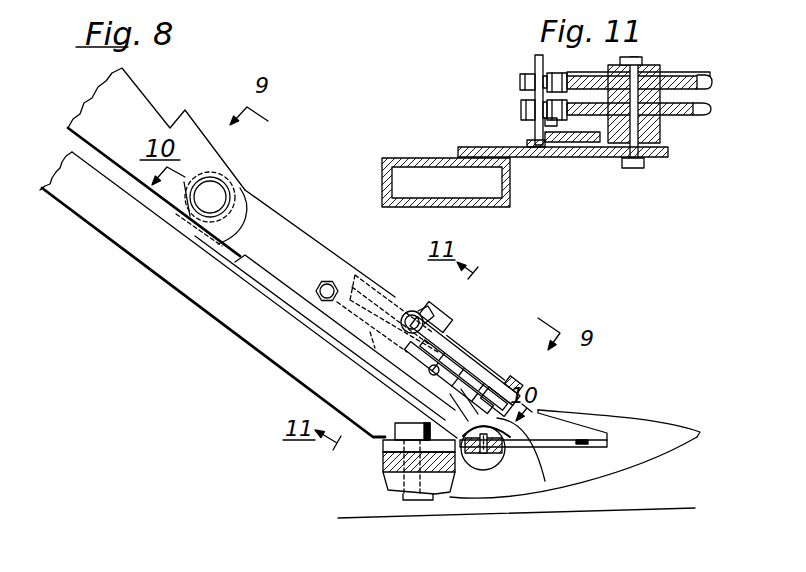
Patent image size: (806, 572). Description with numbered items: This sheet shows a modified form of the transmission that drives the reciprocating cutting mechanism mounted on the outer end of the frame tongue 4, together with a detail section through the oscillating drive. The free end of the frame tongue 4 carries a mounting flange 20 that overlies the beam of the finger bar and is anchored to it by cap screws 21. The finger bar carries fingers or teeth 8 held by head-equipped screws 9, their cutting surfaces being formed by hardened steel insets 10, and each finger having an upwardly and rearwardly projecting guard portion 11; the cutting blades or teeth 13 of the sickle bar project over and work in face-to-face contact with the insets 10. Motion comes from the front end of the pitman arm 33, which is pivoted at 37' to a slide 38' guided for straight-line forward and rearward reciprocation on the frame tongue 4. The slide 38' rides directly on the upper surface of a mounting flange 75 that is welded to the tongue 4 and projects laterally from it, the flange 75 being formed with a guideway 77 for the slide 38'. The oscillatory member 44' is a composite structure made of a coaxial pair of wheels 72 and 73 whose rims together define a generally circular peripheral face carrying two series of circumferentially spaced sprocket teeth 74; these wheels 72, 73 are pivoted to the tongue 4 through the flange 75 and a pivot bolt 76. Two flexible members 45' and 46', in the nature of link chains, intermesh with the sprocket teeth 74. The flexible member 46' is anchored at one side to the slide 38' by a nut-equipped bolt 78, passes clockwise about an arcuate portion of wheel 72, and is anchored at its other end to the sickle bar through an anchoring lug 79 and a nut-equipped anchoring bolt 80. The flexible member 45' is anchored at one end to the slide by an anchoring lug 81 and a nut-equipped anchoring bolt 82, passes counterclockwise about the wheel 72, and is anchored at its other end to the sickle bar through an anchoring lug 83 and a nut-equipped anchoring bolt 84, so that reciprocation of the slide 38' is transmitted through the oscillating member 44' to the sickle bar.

In FIG. 8, the frame tongue 4 is at (290, 350).
In FIG. 11, the frame tongue 4 is at (382, 182).
In FIG. 8, the fingers or teeth 8 is at (508, 483).
In FIG. 8, the head-equipped screws 9 is at (400, 497).
In FIG. 8, the hardened steel insets 10 is at (566, 447).
In FIG. 8, the guard portions 11 is at (565, 415).
In FIG. 8, the cutting blades or teeth 13 is at (607, 442).
In FIG. 8, the mounting flange 20 is at (385, 448).
In FIG. 8, the cap screws 21 is at (396, 428).
In FIG. 8, the pitman arm 33 is at (122, 100).
In FIG. 8, the pivot 37' is at (236, 202).
In FIG. 8, the slide 38' is at (320, 243).
In FIG. 11, the slide 38' is at (511, 88).
In FIG. 8, the oscillatory member 44' is at (465, 354).
In FIG. 11, the oscillatory member 44' is at (678, 123).
In FIG. 8, the flexible member 45' is at (345, 332).
In FIG. 8, the flexible member 46' is at (502, 358).
In FIG. 11, the flexible member 46' is at (663, 57).
In FIG. 8, the wheel 72 is at (456, 352).
In FIG. 11, the wheel 72 is at (682, 78).
In FIG. 11, the wheel 73 is at (696, 114).
In FIG. 11, the sprocket teeth 74 is at (713, 83).
In FIG. 11, the mounting flange 75 is at (600, 153).
In FIG. 11, the pivot bolt 76 is at (642, 66).
In FIG. 11, the guideway 77 is at (572, 148).
In FIG. 8, the nut-equipped bolt 78 is at (411, 312).
In FIG. 11, the nut-equipped bolt 78 is at (520, 81).
In FIG. 8, the anchoring lug 79 is at (491, 376).
In FIG. 8, the nut-equipped anchoring bolt 80 is at (521, 395).
In FIG. 11, the anchoring lug 81 is at (545, 124).
In FIG. 8, the nut-equipped anchoring bolt 82 is at (320, 285).
In FIG. 11, the nut-equipped anchoring bolt 82 is at (521, 109).
In FIG. 8, the anchoring lug 83 is at (500, 452).
In FIG. 8, the nut-equipped anchoring bolt 84 is at (522, 430).